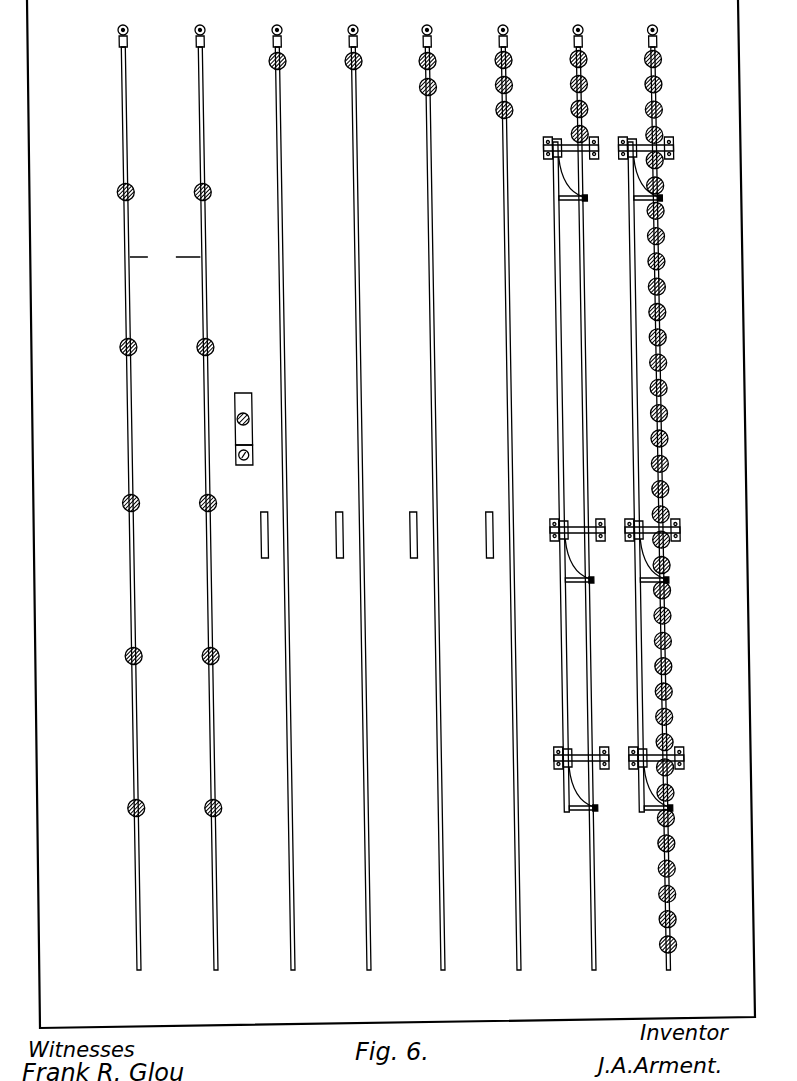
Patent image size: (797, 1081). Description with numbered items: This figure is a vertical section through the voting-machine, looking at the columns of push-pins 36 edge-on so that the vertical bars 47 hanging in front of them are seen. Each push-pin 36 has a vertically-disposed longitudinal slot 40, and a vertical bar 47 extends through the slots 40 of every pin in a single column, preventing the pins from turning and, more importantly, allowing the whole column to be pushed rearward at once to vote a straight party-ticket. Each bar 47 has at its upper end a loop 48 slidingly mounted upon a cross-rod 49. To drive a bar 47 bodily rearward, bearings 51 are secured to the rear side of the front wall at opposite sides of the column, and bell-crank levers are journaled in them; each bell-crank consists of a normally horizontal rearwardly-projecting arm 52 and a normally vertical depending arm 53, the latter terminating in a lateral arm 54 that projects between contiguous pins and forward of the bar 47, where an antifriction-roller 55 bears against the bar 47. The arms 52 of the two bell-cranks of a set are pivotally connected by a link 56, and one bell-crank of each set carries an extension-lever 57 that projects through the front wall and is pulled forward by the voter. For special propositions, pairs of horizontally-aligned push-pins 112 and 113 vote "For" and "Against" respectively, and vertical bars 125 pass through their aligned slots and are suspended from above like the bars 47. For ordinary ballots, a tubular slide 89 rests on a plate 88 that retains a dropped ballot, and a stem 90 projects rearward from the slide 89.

The push-pin 36 is at (494, 62).
The longitudinal slot 40 is at (494, 96).
The vertical bar 47 is at (279, 320).
The loop 48 is at (117, 31).
The cross-rod 49 is at (126, 28).
The bearing 51 is at (619, 137).
The rearwardly-projecting arm 52 is at (672, 148).
The depending arm 53 is at (576, 578).
The lateral arm 54 is at (656, 217).
The antifriction-roller 55 is at (659, 198).
The link 56 is at (550, 378).
The extension-lever 57 is at (629, 521).
The plate 88 is at (233, 466).
The tubular slide 89 is at (245, 436).
The stem 90 is at (238, 412).
The push-pin 112 is at (190, 192).
The push-pin 113 is at (113, 192).
The vertical bar 125 is at (165, 258).